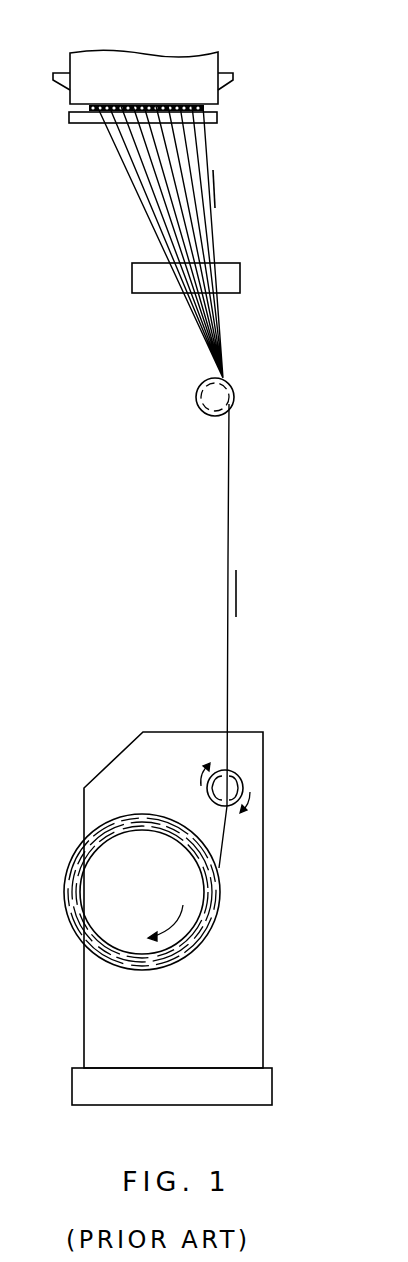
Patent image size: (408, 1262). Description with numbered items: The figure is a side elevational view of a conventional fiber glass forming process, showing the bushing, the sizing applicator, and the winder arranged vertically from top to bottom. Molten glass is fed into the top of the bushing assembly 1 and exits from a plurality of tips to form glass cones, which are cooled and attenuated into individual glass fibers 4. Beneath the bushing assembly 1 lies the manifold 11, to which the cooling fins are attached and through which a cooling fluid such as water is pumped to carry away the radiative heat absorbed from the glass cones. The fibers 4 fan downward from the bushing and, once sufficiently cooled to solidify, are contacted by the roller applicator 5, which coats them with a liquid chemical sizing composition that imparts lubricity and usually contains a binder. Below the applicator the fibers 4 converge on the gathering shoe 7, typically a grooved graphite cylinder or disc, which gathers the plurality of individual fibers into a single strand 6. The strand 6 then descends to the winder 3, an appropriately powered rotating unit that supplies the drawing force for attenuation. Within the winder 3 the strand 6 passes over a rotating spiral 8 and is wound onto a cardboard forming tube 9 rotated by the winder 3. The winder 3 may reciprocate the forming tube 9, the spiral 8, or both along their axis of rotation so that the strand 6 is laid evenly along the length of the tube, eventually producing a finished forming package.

The bushing assembly 1 is at (165, 48).
The manifold 11 is at (81, 126).
The glass fibers 4 is at (157, 206).
The roller applicator 5 is at (150, 294).
The gathering shoe 7 is at (211, 418).
The strand 6 is at (229, 506).
The winder 3 is at (151, 728).
The rotating spiral 8 is at (243, 785).
The cardboard forming tube 9 is at (90, 866).